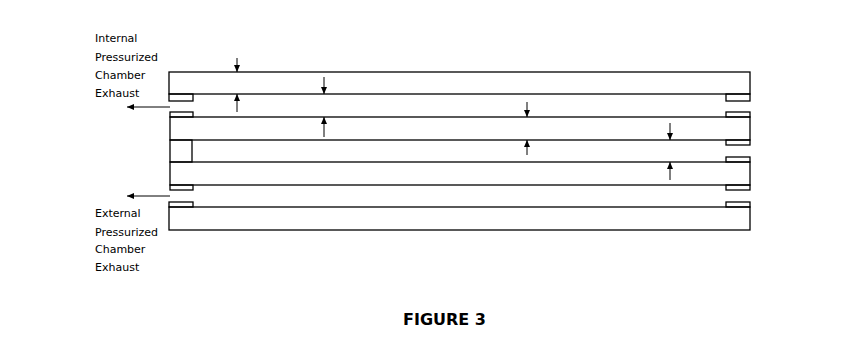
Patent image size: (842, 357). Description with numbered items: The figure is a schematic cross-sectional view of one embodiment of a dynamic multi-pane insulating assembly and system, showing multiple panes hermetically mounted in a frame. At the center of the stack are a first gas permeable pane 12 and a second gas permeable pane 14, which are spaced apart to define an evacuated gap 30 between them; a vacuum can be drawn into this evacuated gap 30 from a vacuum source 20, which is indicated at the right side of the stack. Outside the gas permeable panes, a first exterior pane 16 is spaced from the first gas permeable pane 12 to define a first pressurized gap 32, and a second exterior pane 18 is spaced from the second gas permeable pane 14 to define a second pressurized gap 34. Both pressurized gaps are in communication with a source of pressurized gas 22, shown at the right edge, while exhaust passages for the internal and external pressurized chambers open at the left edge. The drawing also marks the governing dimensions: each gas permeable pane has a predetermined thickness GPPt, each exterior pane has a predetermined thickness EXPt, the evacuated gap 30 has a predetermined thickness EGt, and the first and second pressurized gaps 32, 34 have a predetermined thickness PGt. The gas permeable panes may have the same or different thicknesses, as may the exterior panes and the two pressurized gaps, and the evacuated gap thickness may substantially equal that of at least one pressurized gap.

The first gas permeable pane 12 is at (467, 133).
The second gas permeable pane 14 is at (339, 178).
The first exterior pane 16 is at (502, 89).
The second exterior pane 18 is at (509, 223).
The vacuum source 20 is at (748, 150).
The source of pressurized gas 22 is at (752, 106).
The evacuated gap 30 is at (294, 154).
The first pressurized gap 32 is at (417, 110).
The second pressurized gap 34 is at (580, 203).
The predetermined thickness of the exterior panes EXPt is at (237, 83).
The predetermined thickness of the pressurized gaps PGt is at (325, 105).
The predetermined thickness of the gas permeable panes GPPt is at (527, 127).
The predetermined thickness of the evacuated gap EGt is at (670, 151).